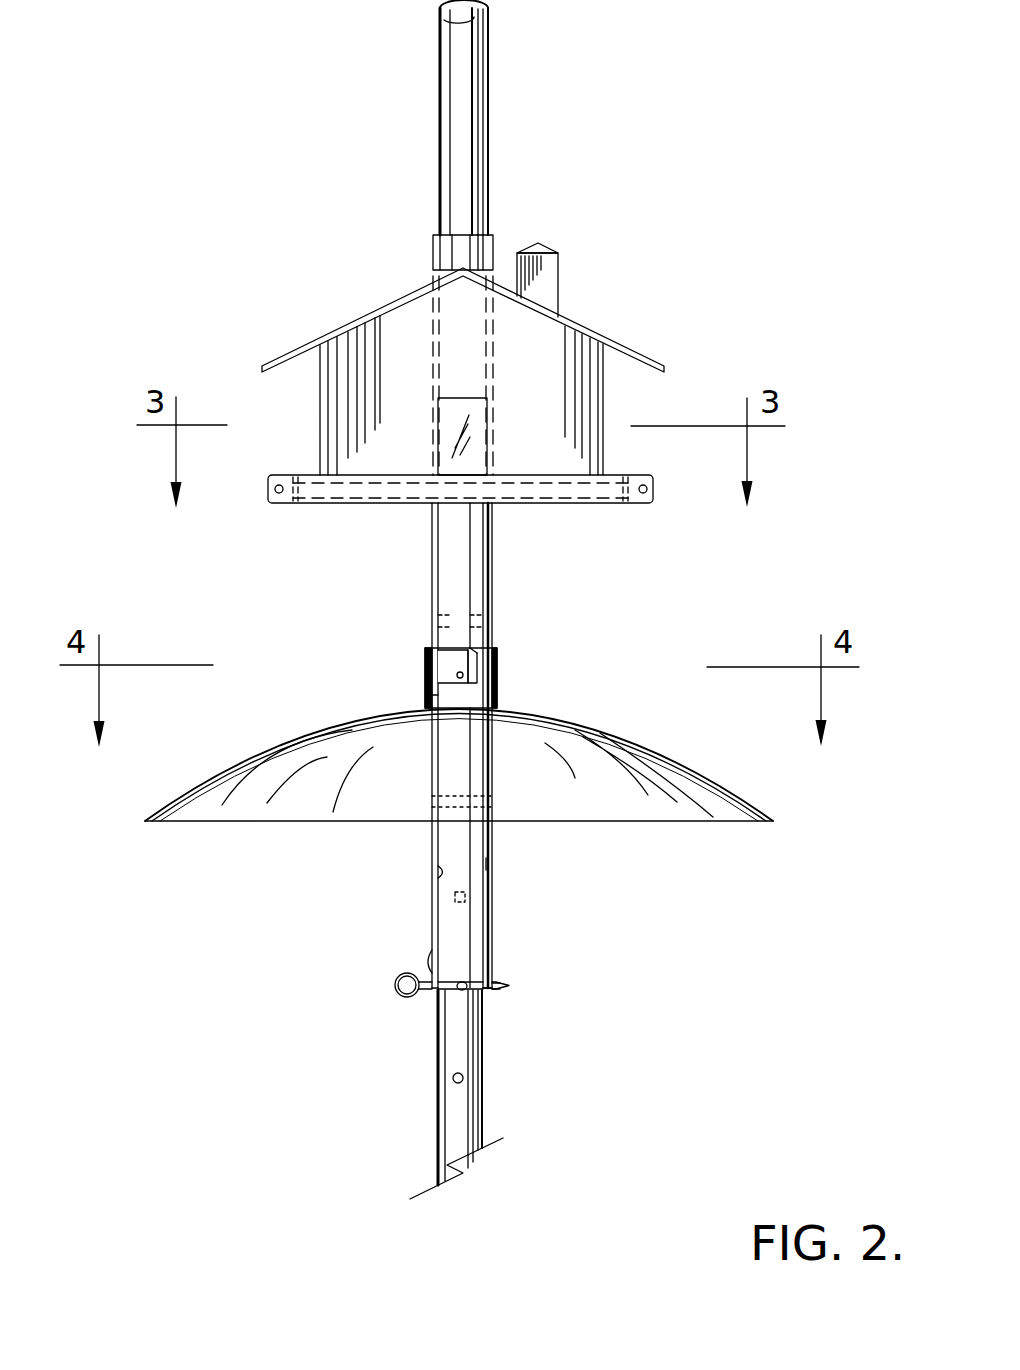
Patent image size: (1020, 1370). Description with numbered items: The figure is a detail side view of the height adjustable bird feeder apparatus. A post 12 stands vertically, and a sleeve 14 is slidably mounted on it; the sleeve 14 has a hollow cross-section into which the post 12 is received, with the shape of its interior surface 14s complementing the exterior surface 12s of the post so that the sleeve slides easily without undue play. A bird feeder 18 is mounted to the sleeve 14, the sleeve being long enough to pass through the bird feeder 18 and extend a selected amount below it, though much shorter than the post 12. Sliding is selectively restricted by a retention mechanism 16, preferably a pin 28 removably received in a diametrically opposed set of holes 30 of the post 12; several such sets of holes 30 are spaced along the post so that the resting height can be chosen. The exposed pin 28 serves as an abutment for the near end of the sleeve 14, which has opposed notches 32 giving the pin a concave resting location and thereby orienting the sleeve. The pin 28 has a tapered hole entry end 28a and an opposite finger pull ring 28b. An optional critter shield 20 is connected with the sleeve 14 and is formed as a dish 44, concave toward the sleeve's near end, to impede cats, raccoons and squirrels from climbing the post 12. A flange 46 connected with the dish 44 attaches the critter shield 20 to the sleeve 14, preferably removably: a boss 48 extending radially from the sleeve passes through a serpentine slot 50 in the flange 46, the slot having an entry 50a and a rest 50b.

The post 12 is at (417, 1110).
The exterior surface of the post 12s is at (490, 863).
The sleeve 14 is at (408, 864).
The interior surface of the sleeve 14s is at (432, 888).
The retention mechanism 16 is at (507, 1027).
The bird feeder 18 is at (629, 342).
The critter shield 20 is at (744, 700).
The pin 28 is at (410, 998).
The tapered hole entry end 28a is at (510, 980).
The finger pull ring 28b is at (395, 985).
The holes 30 is at (430, 620).
The notches 32 is at (493, 980).
The dish 44 is at (200, 782).
The flange 46 is at (497, 688).
The boss 48 is at (427, 697).
The serpentine slot 50 is at (503, 666).
The entry 50a is at (470, 648).
The rest 50b is at (457, 673).